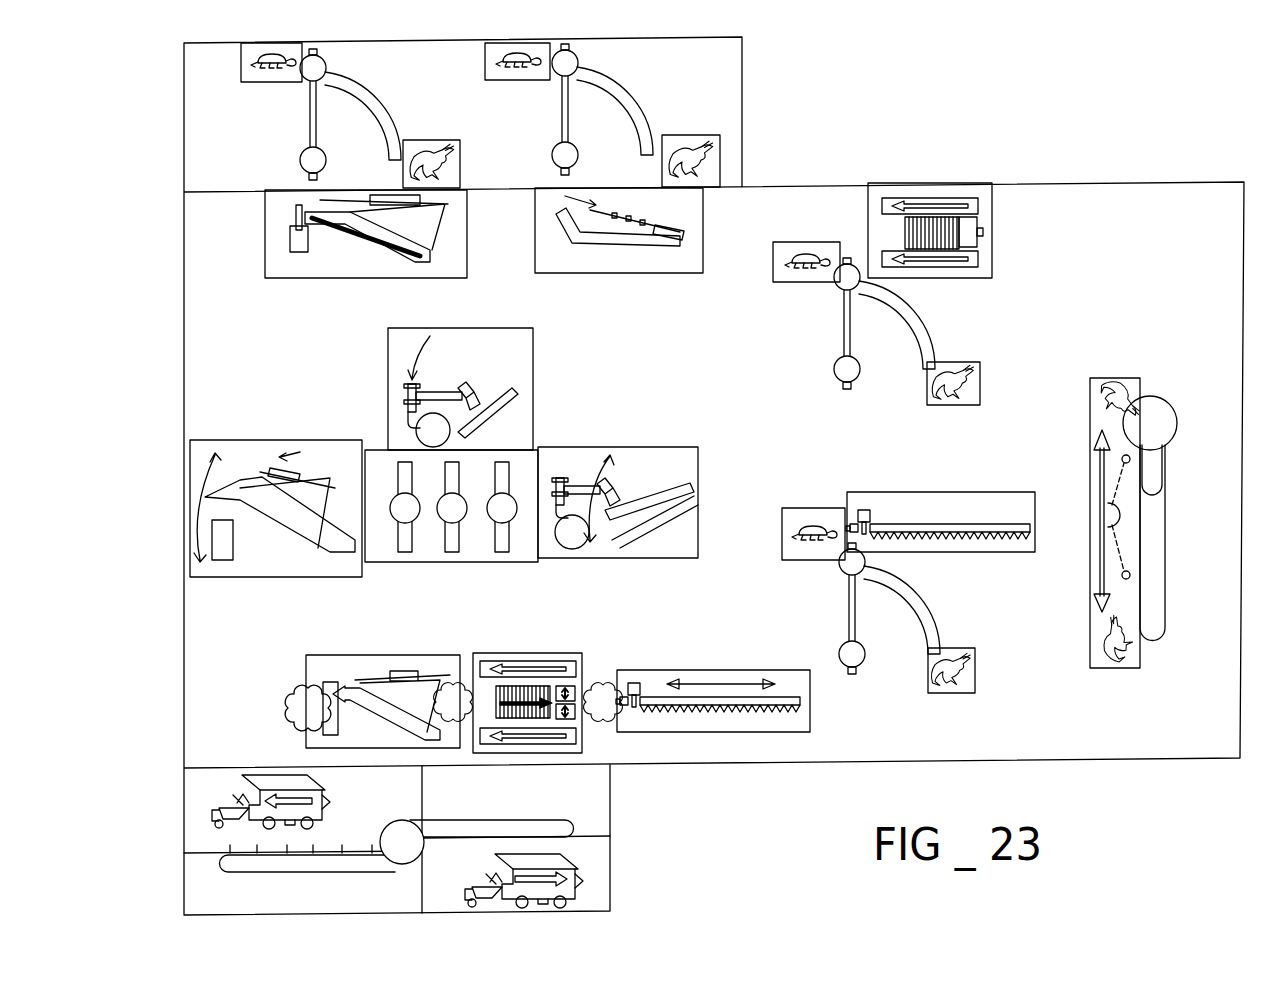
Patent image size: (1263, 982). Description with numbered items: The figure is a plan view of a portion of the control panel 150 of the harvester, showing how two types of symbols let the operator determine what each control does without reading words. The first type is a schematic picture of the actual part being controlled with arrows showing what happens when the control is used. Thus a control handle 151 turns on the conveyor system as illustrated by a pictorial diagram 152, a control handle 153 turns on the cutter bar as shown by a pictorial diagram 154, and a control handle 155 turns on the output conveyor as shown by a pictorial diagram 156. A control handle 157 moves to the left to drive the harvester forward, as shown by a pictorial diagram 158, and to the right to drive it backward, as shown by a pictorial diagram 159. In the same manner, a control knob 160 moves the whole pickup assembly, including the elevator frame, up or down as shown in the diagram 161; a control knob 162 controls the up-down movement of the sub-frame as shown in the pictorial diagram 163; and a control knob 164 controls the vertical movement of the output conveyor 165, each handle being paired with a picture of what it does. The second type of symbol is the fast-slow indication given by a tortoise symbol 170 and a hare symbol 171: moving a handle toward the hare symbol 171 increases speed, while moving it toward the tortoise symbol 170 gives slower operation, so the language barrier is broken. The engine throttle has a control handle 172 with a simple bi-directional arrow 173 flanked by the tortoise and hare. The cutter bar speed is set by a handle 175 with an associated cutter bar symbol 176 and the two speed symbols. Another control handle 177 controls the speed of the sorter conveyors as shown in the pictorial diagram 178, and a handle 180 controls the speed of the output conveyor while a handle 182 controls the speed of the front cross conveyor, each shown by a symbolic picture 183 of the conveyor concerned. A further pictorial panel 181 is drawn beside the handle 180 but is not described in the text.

The control panel 150 is at (178, 352).
The control handle 151 is at (455, 700).
The pictorial diagram 152 is at (550, 655).
The control handle 153 is at (600, 687).
The pictorial diagram 154 is at (727, 673).
The control handle 155 is at (298, 698).
The pictorial diagram 156 is at (388, 658).
The control handle 157 is at (405, 835).
The pictorial diagram 158 is at (377, 802).
The pictorial diagram 159 is at (443, 887).
The control knob 160 is at (402, 513).
The diagram 161 is at (627, 484).
The control knob 162 is at (452, 512).
The pictorial diagram 163 is at (515, 377).
The control knob 164 is at (503, 512).
The output conveyor 165 is at (313, 567).
The tortoise symbol 170 is at (248, 72).
The hare symbol 171 is at (453, 175).
The control handle 172 is at (1157, 438).
The bi-directional arrow 173 is at (1095, 550).
The handle 175 is at (847, 562).
The symbol 176 is at (1030, 533).
The control handle 177 is at (842, 282).
The pictorial diagram 178 is at (967, 197).
The handle 180 is at (307, 71).
The auger indicator panel 181 is at (370, 263).
The handle 182 is at (568, 62).
The symbolic picture 183 is at (695, 233).